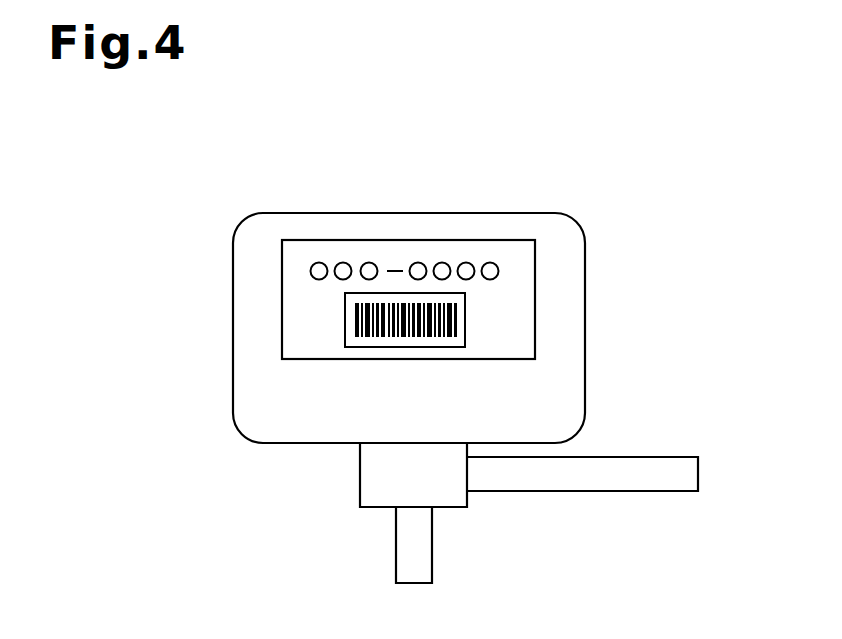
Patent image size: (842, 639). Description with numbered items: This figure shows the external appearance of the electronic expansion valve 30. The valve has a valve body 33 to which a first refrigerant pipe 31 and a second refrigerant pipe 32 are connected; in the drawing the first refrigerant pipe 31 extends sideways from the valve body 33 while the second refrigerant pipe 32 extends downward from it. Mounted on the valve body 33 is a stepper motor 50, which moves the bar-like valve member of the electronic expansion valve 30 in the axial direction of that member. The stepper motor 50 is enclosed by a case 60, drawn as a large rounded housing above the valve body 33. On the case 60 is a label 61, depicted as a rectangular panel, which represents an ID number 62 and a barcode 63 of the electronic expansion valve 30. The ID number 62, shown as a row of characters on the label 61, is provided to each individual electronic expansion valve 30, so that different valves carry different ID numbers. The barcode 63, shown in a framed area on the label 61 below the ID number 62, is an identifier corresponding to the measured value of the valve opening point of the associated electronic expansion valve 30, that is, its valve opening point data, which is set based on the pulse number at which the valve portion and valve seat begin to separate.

The electronic expansion valve 30 is at (202, 203).
The first refrigerant pipe 31 is at (575, 492).
The second refrigerant pipe 32 is at (433, 562).
The valve body 33 is at (360, 487).
The stepper motor 50 is at (588, 400).
The case 60 is at (586, 287).
The label 61 is at (481, 240).
The ID number 62 is at (310, 270).
The barcode 63 is at (345, 338).